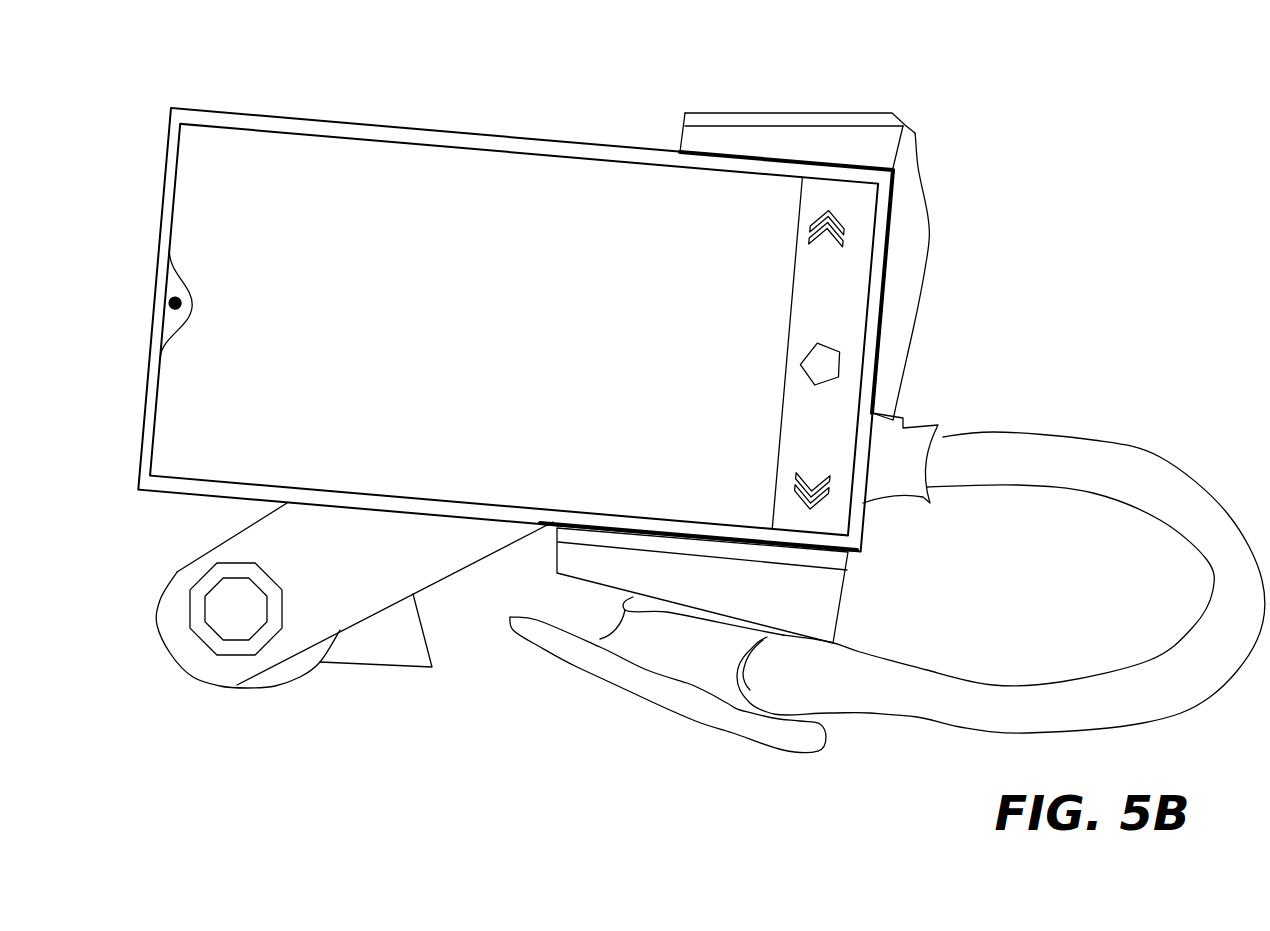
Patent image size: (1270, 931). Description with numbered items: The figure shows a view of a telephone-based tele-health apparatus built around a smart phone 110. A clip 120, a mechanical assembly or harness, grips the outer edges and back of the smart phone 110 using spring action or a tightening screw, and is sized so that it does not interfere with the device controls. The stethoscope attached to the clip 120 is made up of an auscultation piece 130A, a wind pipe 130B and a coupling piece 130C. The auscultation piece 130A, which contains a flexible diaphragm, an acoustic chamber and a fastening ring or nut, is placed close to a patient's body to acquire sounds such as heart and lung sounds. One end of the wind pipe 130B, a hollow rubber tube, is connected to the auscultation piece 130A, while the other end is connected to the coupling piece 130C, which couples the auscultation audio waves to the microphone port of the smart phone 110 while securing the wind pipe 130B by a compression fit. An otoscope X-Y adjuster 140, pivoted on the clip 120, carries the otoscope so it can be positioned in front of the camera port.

The smart phone 110 is at (285, 162).
The clip 120 is at (812, 113).
The auscultation piece 130A is at (652, 678).
The wind pipe 130B is at (1170, 487).
The coupling piece 130C is at (903, 423).
The otoscope X-Y adjuster 140 is at (422, 557).